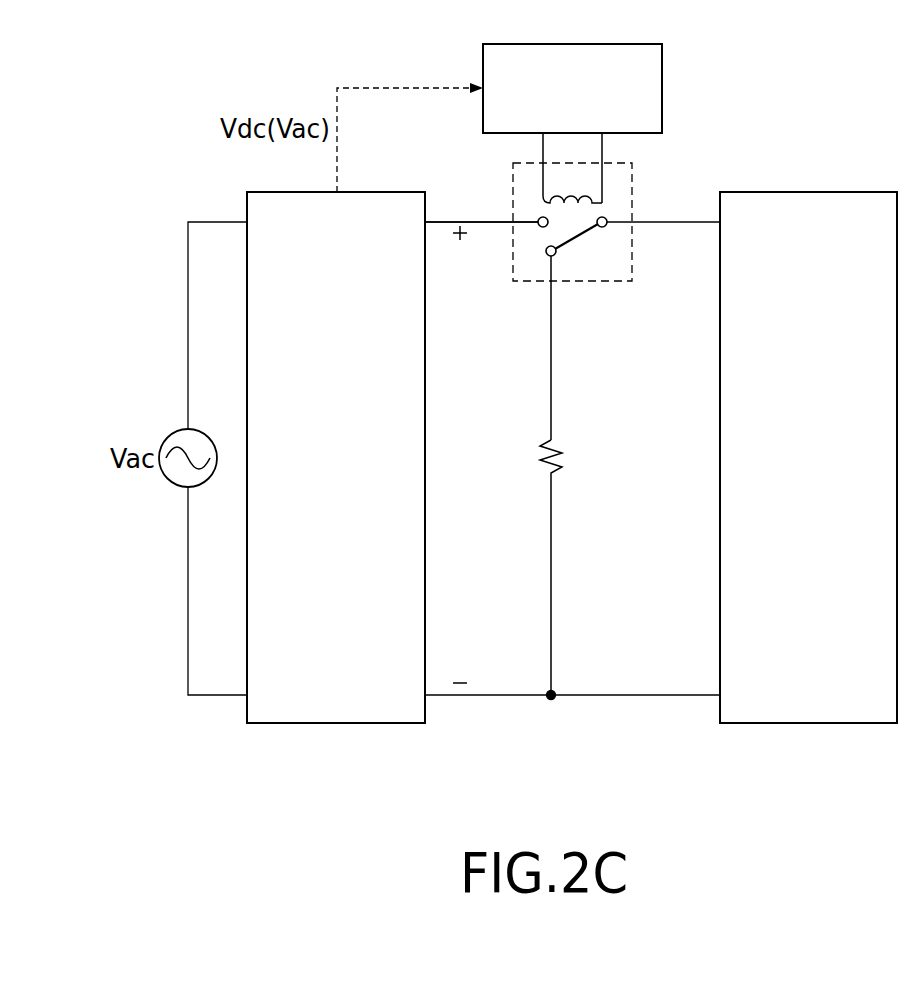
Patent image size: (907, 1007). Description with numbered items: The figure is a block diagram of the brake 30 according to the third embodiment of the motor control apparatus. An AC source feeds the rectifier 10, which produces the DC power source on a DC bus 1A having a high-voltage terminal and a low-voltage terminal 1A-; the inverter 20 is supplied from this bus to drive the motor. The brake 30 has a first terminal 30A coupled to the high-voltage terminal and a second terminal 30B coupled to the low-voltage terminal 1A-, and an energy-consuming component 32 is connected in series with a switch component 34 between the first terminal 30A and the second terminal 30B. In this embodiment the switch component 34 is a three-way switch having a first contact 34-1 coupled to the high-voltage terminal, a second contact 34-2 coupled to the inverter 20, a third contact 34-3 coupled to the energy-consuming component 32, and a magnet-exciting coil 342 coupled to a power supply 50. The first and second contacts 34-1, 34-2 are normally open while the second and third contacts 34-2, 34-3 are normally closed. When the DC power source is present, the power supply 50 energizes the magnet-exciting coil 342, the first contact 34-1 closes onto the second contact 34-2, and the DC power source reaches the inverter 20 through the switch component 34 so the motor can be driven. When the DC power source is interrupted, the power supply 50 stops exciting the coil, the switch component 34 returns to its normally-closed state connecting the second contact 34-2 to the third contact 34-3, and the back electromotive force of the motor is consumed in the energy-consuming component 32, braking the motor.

The rectifier 10 is at (324, 198).
The inverter 20 is at (808, 198).
The brake 30 is at (538, 750).
The first terminal 30A is at (690, 220).
The second terminal 30B is at (555, 713).
The energy-consuming component 32 is at (562, 447).
The switch component 34 is at (572, 282).
The first contact 34-1 is at (538, 226).
The second contact 34-2 is at (607, 226).
The third contact 34-3 is at (547, 257).
The magnet-exciting coil 342 is at (602, 203).
The power supply 50 is at (583, 50).
The DC bus 1A is at (436, 182).
The low-voltage terminal 1A- is at (455, 700).